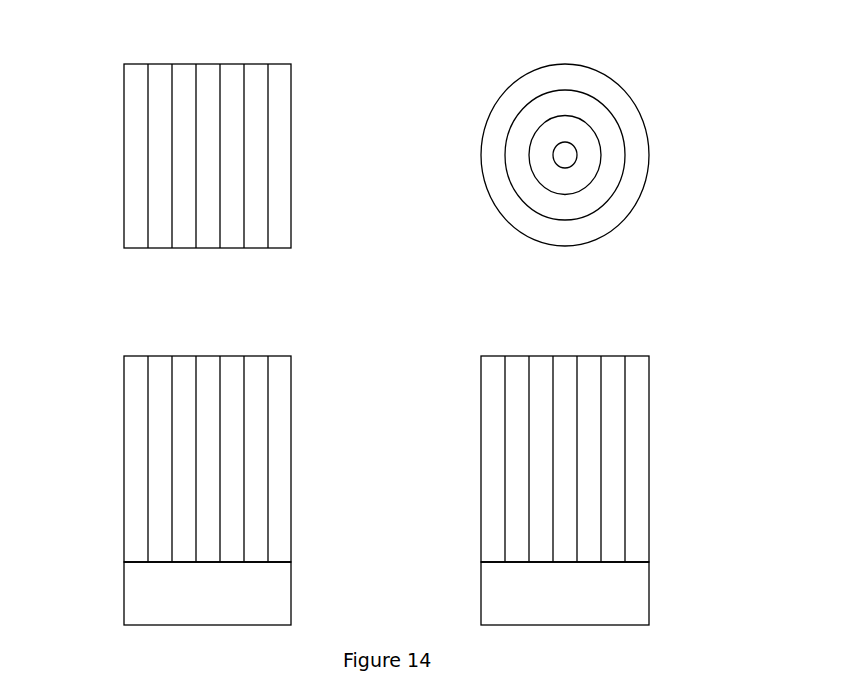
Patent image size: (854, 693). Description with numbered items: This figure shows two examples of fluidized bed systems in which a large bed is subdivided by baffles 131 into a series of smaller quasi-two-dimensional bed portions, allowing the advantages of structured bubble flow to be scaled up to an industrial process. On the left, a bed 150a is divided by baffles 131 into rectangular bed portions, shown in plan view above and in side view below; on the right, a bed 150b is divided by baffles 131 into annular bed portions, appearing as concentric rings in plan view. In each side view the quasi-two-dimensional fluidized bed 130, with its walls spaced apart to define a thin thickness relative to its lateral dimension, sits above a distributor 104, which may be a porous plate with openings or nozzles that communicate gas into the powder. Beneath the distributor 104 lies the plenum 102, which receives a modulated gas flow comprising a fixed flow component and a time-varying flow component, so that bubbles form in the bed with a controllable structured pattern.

The baffles 131 is at (148, 167).
The quasi-2D fluidized bed 130 is at (134, 355).
The bed comprising rectangular bed portions 150a is at (295, 333).
The bed comprising annular bed portions 150b is at (652, 333).
The distributor 104 is at (291, 562).
The plenum 102 is at (227, 607).